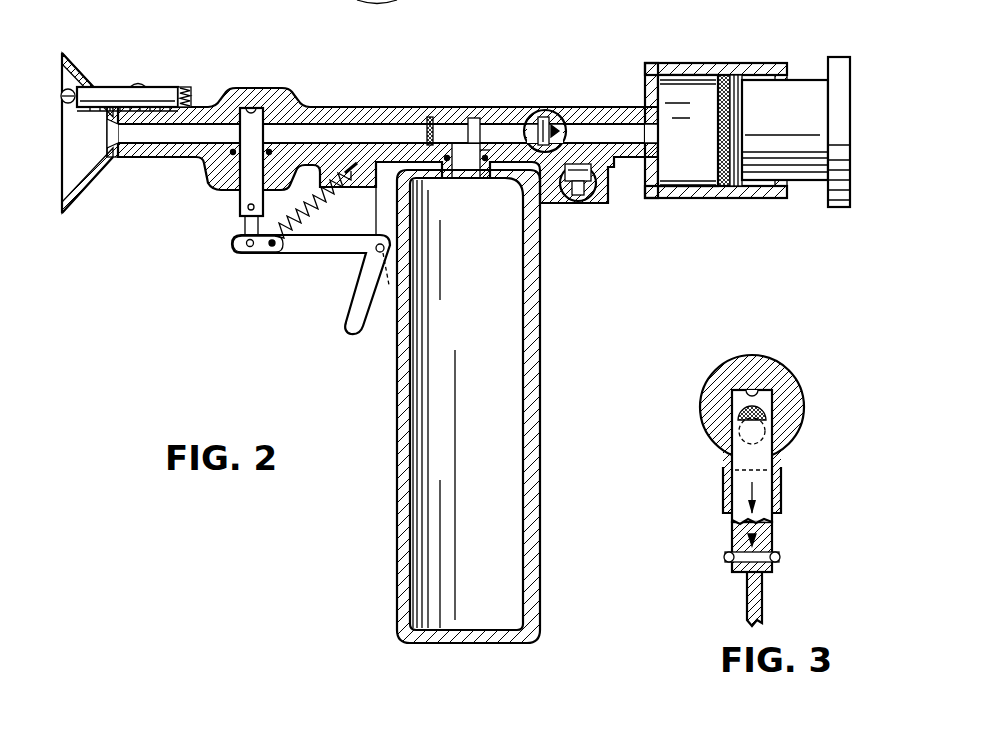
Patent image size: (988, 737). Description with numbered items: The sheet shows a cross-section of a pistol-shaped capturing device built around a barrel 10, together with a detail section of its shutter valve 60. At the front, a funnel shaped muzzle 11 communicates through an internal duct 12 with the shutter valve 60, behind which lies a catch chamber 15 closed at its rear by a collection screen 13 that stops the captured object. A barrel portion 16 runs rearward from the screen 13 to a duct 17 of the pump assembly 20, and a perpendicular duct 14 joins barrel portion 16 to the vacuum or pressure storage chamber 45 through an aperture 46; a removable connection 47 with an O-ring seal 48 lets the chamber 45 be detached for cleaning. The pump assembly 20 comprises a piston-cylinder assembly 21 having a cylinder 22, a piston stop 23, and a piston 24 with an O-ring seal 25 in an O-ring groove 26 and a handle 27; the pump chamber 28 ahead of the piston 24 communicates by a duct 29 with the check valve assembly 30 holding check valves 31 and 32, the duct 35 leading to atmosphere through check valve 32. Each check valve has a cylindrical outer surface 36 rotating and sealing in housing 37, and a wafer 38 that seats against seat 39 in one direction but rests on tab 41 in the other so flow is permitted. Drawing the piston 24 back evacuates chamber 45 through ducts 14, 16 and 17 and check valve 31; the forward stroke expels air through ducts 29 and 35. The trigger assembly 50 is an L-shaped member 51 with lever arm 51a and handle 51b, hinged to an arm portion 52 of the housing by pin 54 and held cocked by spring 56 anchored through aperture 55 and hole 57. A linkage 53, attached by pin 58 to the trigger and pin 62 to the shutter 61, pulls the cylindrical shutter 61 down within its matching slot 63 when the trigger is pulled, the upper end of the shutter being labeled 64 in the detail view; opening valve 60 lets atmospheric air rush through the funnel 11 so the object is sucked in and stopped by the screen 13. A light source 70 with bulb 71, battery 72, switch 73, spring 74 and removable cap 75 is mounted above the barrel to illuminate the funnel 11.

In FIG. 2, the barrel 10 is at (428, 90).
In FIG. 3, the barrel 10 is at (706, 452).
In FIG. 2, the funnel shaped opening or muzzle 11 is at (73, 197).
In FIG. 2, the internal duct or barrel portion 12 is at (190, 130).
In FIG. 2, the collection screen or net 13 is at (430, 118).
In FIG. 3, the collection screen or net 13 is at (740, 414).
In FIG. 2, the perpendicular duct 14 is at (469, 142).
In FIG. 2, the catch chamber 15 is at (341, 128).
In FIG. 3, the catch chamber 15 is at (789, 438).
In FIG. 2, the barrel portion 16 is at (490, 131).
In FIG. 2, the duct 17 is at (516, 136).
In FIG. 2, the pump assembly 20 is at (632, 46).
In FIG. 2, the piston-cylinder assembly 21 is at (680, 64).
In FIG. 2, the cylinder 22 is at (770, 64).
In FIG. 2, the piston stop 23 is at (787, 73).
In FIG. 2, the piston 24 is at (805, 182).
In FIG. 2, the O-ring seal 25 is at (724, 75).
In FIG. 2, the O-ring groove 26 is at (736, 76).
In FIG. 2, the handle 27 is at (846, 124).
In FIG. 2, the pump chamber 28 is at (678, 170).
In FIG. 2, the duct 29 is at (630, 128).
In FIG. 2, the check valve assembly 30 is at (580, 78).
In FIG. 2, the check valve 31 is at (547, 128).
In FIG. 2, the check valve 32 is at (558, 204).
In FIG. 2, the duct 35 is at (578, 201).
In FIG. 2, the cylindrical outer surface 36 is at (594, 167).
In FIG. 2, the housing 37 is at (588, 192).
In FIG. 2, the wafer 38 is at (548, 117).
In FIG. 2, the seat 39 is at (538, 118).
In FIG. 2, the tab 41 is at (557, 128).
In FIG. 2, the vacuum or pressure storage chamber 45 is at (542, 460).
In FIG. 2, the aperture 46 is at (464, 182).
In FIG. 2, the removable connection 47 is at (452, 176).
In FIG. 2, the O-ring seal 48 is at (495, 177).
In FIG. 2, the trigger assembly 50 is at (280, 292).
In FIG. 2, the L-shaped member 51 is at (325, 255).
In FIG. 2, the lever arm 51a is at (285, 251).
In FIG. 2, the handle 51b is at (350, 306).
In FIG. 2, the arm portion 52 is at (375, 216).
In FIG. 2, the linkage 53 is at (245, 222).
In FIG. 3, the linkage 53 is at (748, 598).
In FIG. 2, the pin 54 is at (377, 251).
In FIG. 2, the aperture 55 is at (248, 250).
In FIG. 2, the spring 56 is at (327, 201).
In FIG. 2, the hole 57 is at (345, 169).
In FIG. 2, the pin 58 is at (246, 243).
In FIG. 2, the shutter valve 60 is at (276, 101).
In FIG. 2, the shutter 61 is at (238, 174).
In FIG. 3, the shutter 61 is at (765, 500).
In FIG. 2, the pin 62 is at (248, 207).
In FIG. 3, the pin 62 is at (779, 553).
In FIG. 3, the slot 63 is at (776, 401).
In FIG. 2, the ball cage 64 is at (250, 110).
In FIG. 3, the ball cage 64 is at (780, 372).
In FIG. 2, the light source 70 is at (147, 70).
In FIG. 2, the light bulb 71 is at (63, 88).
In FIG. 2, the battery 72 is at (103, 86).
In FIG. 2, the switch 73 is at (138, 84).
In FIG. 2, the spring 74 is at (184, 88).
In FIG. 2, the removable cap 75 is at (191, 98).